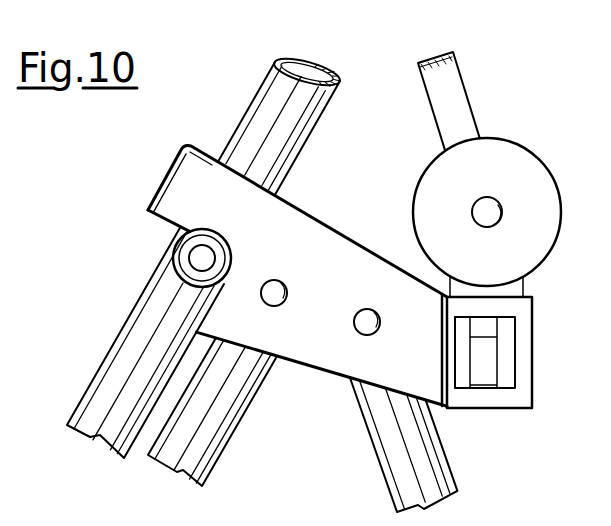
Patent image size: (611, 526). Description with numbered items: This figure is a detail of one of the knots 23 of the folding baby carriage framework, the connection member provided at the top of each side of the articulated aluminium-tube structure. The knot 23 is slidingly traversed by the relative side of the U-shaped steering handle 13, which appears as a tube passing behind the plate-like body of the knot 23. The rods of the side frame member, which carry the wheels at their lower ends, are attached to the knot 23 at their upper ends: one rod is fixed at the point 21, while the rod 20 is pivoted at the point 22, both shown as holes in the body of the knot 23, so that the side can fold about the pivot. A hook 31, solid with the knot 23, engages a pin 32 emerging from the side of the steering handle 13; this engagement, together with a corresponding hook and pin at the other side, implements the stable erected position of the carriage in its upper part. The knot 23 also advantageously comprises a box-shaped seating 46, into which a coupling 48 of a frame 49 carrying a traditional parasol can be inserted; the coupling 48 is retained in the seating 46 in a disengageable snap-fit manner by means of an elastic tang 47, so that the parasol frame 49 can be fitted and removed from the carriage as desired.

The steering handle 13 is at (312, 150).
The rod 20 is at (408, 462).
The fixing point 21 is at (277, 290).
The pivot 22 is at (365, 320).
The knot 23 is at (322, 346).
The hook 31 is at (176, 180).
The pin 32 is at (193, 262).
The box-shaped seating 46 is at (525, 380).
The elastic tang 47 is at (488, 328).
The coupling 48 is at (513, 292).
The frame 49 is at (460, 108).